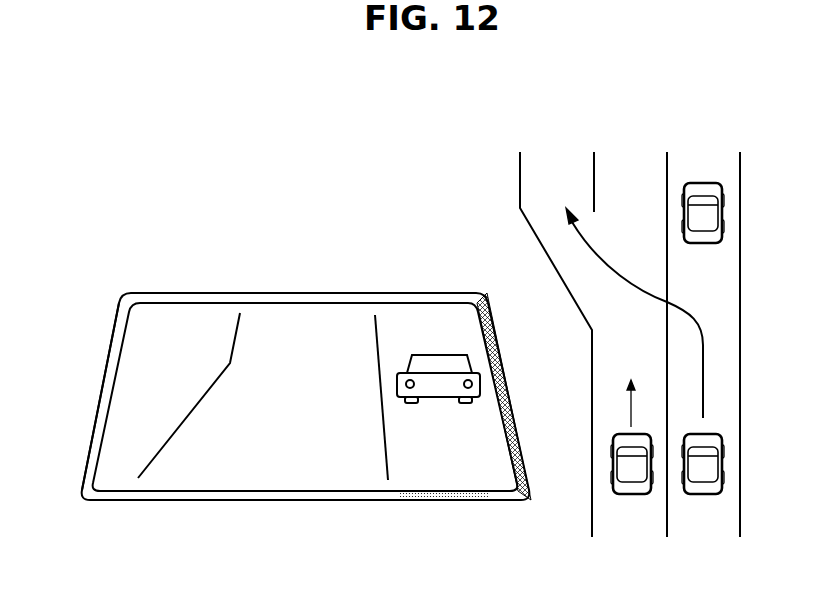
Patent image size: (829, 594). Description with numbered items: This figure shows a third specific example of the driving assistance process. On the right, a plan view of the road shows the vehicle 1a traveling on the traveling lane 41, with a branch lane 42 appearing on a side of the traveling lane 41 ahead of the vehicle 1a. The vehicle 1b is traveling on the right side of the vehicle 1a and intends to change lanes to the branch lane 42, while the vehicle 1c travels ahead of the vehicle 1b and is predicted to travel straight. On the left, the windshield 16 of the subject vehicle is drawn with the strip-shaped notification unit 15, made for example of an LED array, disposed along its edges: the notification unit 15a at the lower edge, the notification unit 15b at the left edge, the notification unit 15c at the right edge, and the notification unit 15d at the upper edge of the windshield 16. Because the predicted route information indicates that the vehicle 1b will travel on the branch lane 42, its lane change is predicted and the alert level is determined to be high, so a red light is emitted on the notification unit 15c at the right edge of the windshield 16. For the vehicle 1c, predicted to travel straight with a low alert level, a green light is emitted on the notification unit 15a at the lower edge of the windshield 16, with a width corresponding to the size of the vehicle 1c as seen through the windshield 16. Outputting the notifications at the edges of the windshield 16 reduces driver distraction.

The notification unit 15 is at (441, 263).
The notification unit at the lower edge of the windshield 15a is at (228, 497).
The notification unit at the left edge of the windshield 15b is at (100, 400).
The notification unit at the right edge of the windshield 15c is at (512, 388).
The notification unit at the upper edge of the windshield 15d is at (200, 300).
The windshield 16 is at (282, 337).
The vehicle 1a is at (633, 495).
The vehicle 1b is at (725, 462).
The vehicle 1c is at (430, 353).
The traveling lane 41 is at (740, 141).
The branch lane 42 is at (552, 150).